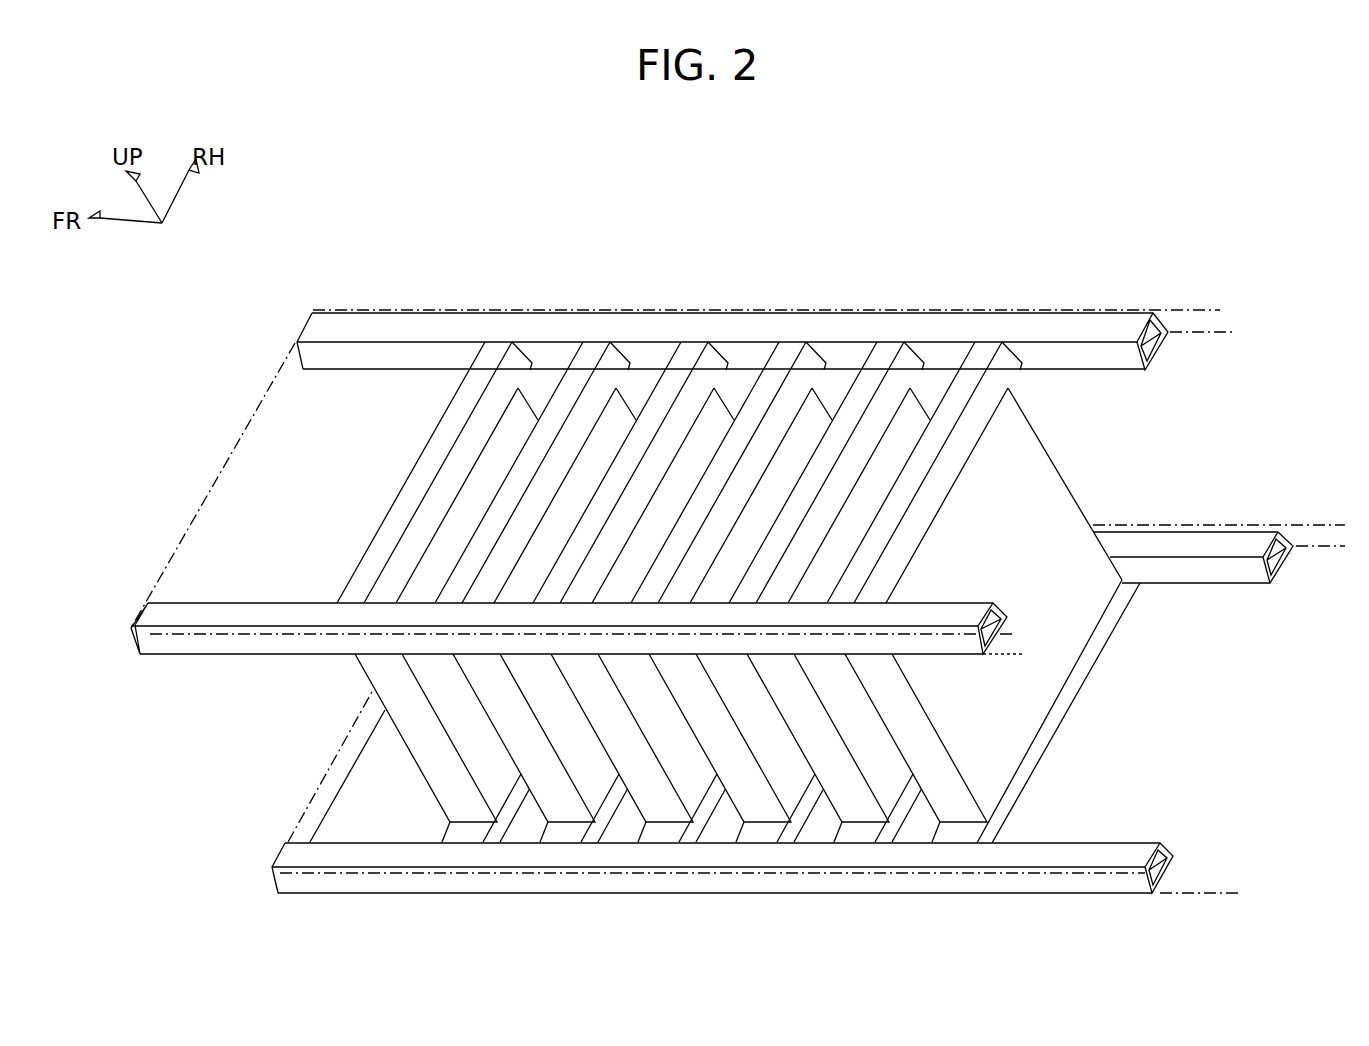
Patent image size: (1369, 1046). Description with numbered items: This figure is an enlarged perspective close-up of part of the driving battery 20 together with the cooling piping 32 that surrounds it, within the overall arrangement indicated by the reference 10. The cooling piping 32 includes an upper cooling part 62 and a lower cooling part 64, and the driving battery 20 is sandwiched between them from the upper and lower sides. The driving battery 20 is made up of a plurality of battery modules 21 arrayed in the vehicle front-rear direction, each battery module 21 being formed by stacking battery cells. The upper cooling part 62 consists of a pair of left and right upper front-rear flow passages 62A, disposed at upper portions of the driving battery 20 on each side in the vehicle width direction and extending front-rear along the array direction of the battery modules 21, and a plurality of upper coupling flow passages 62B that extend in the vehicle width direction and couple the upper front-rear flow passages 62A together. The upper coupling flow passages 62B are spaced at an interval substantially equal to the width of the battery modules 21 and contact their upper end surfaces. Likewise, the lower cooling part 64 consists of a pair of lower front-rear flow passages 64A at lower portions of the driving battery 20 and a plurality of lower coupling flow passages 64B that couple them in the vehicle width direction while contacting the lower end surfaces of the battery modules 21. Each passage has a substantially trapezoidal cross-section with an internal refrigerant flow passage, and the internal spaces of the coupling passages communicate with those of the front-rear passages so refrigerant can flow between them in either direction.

The vehicle 10 is at (1192, 212).
The driving battery 20 is at (1074, 262).
The battery module 21 is at (530, 395).
The cooling piping 32 is at (738, 585).
The upper cooling part 62 is at (232, 445).
The upper front-rear flow passage 62A is at (445, 313).
The upper coupling flow passage 62B is at (828, 388).
The lower cooling part 64 is at (313, 790).
The lower front-rear flow passage 64A is at (1200, 584).
The lower coupling flow passage 64B is at (806, 828).